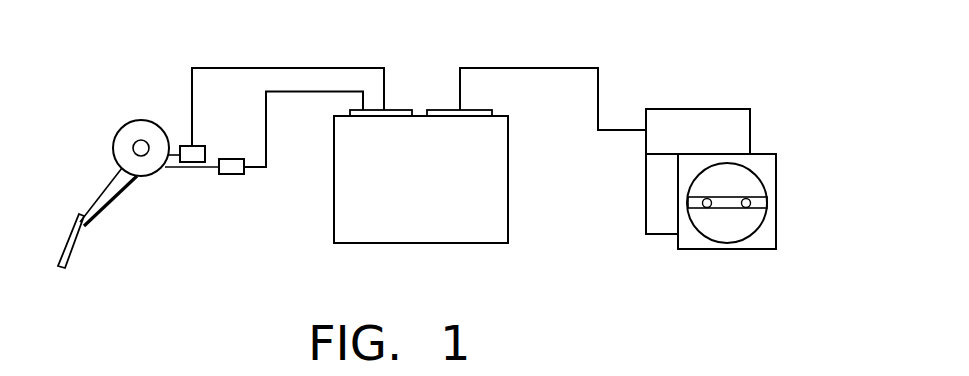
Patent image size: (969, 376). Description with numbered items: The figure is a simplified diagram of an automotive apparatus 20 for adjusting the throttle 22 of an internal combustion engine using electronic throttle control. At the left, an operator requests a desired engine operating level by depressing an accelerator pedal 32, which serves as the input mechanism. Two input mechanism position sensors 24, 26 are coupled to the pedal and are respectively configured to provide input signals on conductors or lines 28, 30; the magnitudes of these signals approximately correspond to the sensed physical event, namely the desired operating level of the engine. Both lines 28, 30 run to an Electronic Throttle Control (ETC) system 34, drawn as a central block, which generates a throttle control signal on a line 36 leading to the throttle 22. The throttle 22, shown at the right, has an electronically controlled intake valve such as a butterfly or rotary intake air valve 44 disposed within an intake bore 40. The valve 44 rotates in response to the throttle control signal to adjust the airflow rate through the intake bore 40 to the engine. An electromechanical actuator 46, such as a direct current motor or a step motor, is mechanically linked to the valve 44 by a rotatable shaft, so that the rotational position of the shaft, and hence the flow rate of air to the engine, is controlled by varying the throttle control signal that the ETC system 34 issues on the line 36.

The apparatus 20 is at (574, 290).
The throttle 22 is at (793, 206).
The input mechanism position sensor 24 is at (188, 144).
The input mechanism position sensor 26 is at (232, 175).
The conductor or line 28 is at (230, 67).
The conductor or line 30 is at (267, 127).
The accelerator pedal 32 is at (70, 238).
The Electronic Throttle Control system 34 is at (370, 244).
The line 36 is at (493, 67).
The intake bore 40 is at (705, 238).
The intake air valve 44 is at (757, 197).
The electromechanical actuator 46 is at (712, 143).